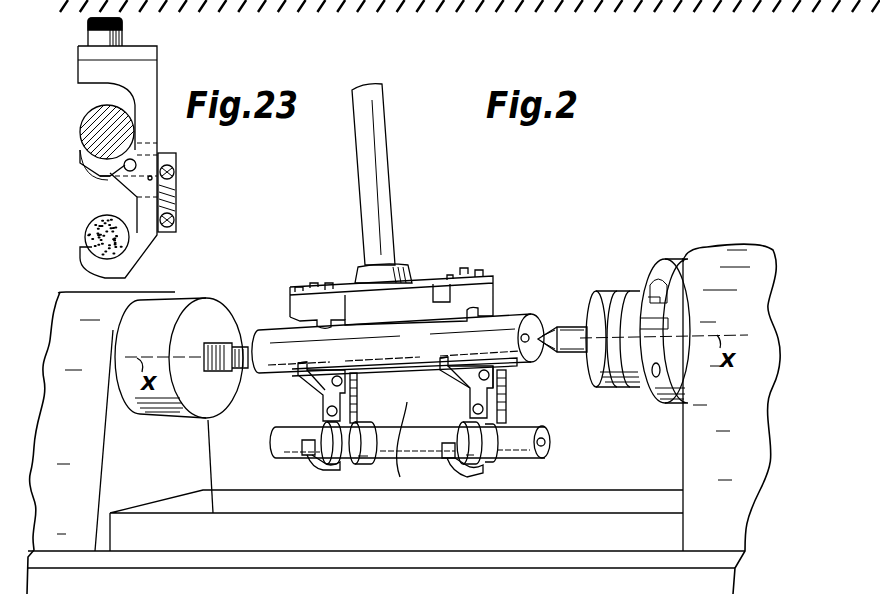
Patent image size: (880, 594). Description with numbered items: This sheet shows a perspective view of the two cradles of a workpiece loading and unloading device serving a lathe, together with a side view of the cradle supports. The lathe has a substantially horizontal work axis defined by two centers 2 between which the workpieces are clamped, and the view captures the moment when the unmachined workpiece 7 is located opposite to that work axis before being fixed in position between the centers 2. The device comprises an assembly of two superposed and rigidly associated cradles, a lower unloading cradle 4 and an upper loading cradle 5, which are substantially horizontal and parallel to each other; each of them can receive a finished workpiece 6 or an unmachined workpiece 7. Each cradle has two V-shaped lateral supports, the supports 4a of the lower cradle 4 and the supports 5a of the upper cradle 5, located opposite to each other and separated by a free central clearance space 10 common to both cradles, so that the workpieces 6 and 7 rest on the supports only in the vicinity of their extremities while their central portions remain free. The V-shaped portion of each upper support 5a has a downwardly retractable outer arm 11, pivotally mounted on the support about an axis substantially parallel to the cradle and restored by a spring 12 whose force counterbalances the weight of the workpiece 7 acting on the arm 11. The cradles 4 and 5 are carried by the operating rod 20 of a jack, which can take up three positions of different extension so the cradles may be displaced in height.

In FIG. 2, the centers 2 is at (252, 346).
In FIG. 2, the lower unloading cradle 4 is at (507, 469).
In FIG. 23, the V-shaped lateral supports of the lower cradle 4a is at (86, 262).
In FIG. 2, the V-shaped lateral supports of the lower cradle 4a is at (312, 470).
In FIG. 2, the upper loading cradle 5 is at (506, 386).
In FIG. 23, the V-shaped lateral supports of the upper cradle 5a is at (106, 178).
In FIG. 2, the V-shaped lateral supports of the upper cradle 5a is at (318, 392).
In FIG. 23, the finished workpiece 6 is at (88, 225).
In FIG. 2, the finished workpiece 6 is at (515, 430).
In FIG. 23, the unmachined workpiece 7 is at (87, 118).
In FIG. 2, the unmachined workpiece 7 is at (503, 320).
In FIG. 2, the free central clearance space 10 is at (388, 447).
In FIG. 23, the retractable outer arm 11 is at (80, 152).
In FIG. 2, the retractable outer arm 11 is at (300, 380).
In FIG. 23, the spring 12 is at (177, 195).
In FIG. 2, the spring 12 is at (358, 394).
In FIG. 23, the operating rod 20 is at (103, 33).
In FIG. 2, the operating rod 20 is at (393, 244).